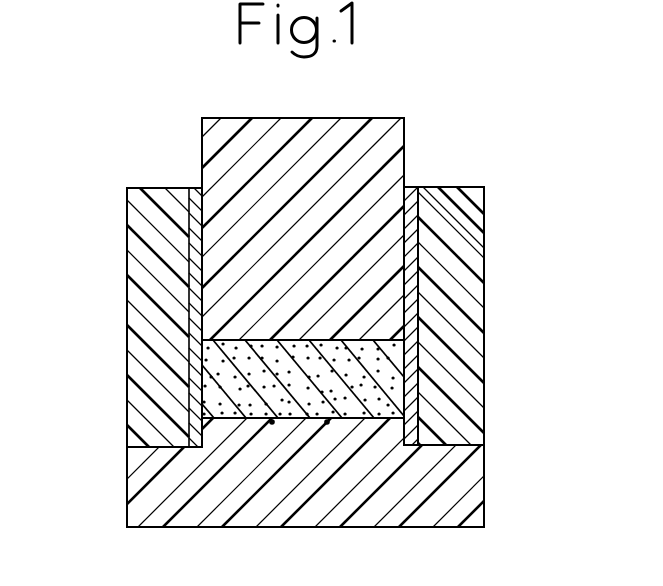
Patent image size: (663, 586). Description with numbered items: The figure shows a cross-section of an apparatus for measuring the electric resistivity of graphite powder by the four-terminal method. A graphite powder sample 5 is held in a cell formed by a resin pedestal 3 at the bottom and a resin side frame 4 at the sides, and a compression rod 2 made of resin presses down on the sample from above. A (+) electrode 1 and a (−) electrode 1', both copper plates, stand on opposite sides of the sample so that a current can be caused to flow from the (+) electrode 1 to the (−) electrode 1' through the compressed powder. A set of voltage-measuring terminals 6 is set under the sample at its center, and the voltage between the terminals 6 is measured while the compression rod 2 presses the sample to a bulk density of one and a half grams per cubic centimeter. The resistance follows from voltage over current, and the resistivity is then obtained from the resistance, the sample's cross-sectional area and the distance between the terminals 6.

The (+) electrode 1 is at (115, 317).
The (−) electrode 1' is at (472, 316).
The compression rod 2 is at (390, 145).
The pedestal 3 is at (457, 488).
The side frame 4 is at (463, 315).
The graphite powder sample 5 is at (360, 382).
The voltage-measuring terminals 6 is at (327, 424).